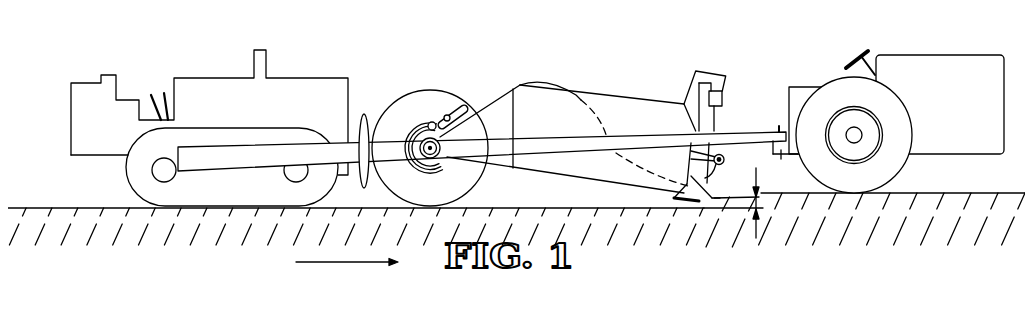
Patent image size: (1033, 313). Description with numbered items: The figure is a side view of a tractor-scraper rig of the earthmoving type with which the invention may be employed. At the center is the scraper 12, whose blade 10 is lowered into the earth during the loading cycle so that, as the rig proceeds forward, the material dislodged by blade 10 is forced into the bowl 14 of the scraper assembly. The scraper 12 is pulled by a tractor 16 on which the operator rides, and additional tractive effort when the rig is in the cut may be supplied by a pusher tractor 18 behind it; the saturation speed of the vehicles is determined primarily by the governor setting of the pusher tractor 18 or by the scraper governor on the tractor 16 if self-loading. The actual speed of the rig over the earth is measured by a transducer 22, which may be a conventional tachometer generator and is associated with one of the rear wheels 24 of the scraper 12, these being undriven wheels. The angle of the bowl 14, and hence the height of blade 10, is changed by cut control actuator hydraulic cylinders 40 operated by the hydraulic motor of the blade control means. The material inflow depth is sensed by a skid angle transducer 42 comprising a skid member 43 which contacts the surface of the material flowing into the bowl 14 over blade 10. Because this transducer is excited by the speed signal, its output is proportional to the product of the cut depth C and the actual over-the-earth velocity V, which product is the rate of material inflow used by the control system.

The blade 10 is at (686, 203).
The scraper 12 is at (570, 124).
The bowl 14 is at (573, 97).
The tractor 16 is at (906, 31).
The pusher tractor 18 is at (300, 50).
The transducer 22 is at (457, 100).
The rear wheels 24 is at (411, 97).
The cut control actuator hydraulic cylinders 40 is at (724, 94).
The skid angle transducer 42 is at (722, 159).
The skid member 43 is at (711, 178).
The cut depth C is at (760, 195).
The actual over-the-earth velocity V is at (340, 263).